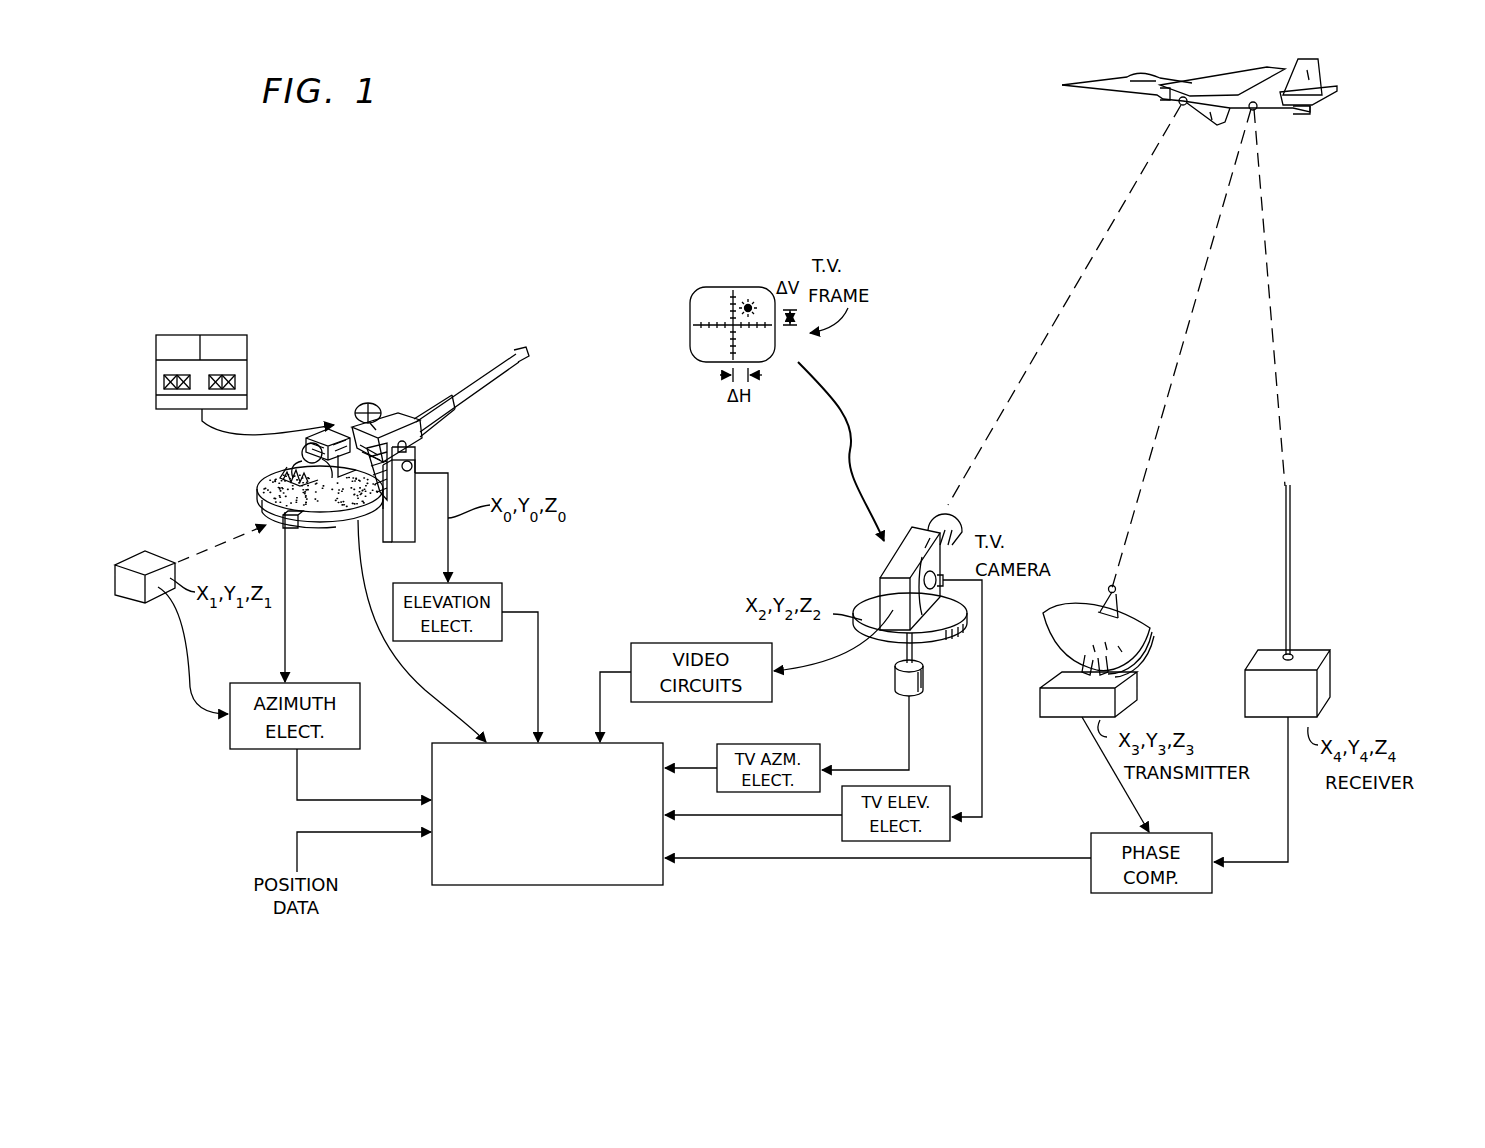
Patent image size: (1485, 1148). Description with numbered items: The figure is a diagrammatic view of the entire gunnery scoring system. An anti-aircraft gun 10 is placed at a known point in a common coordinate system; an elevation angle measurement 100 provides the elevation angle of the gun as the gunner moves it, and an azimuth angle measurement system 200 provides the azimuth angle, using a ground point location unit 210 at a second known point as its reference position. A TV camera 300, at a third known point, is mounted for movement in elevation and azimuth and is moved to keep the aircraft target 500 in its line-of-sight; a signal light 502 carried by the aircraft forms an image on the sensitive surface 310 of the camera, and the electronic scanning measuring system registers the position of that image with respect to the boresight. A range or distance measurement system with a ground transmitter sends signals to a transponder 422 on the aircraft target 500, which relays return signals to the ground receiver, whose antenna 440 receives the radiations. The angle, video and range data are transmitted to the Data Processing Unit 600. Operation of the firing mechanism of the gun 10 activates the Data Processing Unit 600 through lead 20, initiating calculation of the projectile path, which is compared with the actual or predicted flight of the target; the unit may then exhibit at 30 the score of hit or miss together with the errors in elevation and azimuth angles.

The anti-aircraft gun 10 is at (276, 480).
The lead 20 is at (450, 706).
The score display 30 is at (248, 378).
The elevation angle measurement 100 is at (406, 464).
The azimuth angle measurement system 200 is at (293, 532).
The ground point location unit 210 is at (145, 560).
The TV camera 300 is at (882, 580).
The sensitive surface 310 is at (698, 333).
The transponder 422 is at (1258, 110).
The antenna 440 is at (1292, 606).
The aircraft target 500 is at (1181, 107).
The signal light 502 is at (1168, 110).
The Data Processing Unit 600 is at (560, 886).